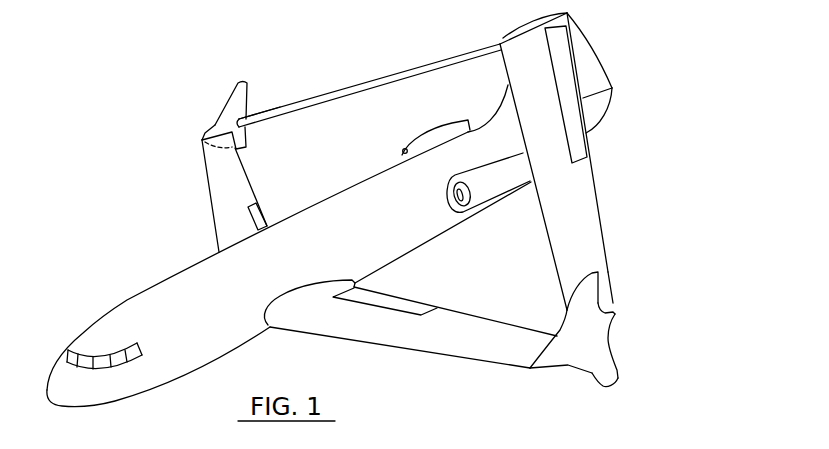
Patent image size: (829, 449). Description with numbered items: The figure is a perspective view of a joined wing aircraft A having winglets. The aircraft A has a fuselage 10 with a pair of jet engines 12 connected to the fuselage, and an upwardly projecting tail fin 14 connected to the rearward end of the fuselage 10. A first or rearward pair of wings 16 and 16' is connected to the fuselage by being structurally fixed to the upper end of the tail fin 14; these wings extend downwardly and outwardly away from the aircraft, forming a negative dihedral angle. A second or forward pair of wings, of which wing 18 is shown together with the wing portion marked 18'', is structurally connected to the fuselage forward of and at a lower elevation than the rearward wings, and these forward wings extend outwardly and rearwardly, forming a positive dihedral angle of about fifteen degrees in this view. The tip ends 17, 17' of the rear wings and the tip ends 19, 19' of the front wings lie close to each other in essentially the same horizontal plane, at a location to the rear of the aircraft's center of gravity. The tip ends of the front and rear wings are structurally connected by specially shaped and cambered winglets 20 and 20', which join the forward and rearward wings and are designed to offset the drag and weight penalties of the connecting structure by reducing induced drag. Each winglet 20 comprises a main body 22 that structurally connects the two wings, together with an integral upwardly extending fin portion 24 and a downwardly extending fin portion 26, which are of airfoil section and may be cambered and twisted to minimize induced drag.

The fuselage 10 is at (108, 297).
The jet engines 12 is at (498, 188).
The tail fin 14 is at (583, 62).
The rearward wing 16 is at (580, 161).
The rearward wing 16' is at (370, 67).
The tip end of rear wing 17 is at (637, 293).
The tip end of rear wing 17' is at (271, 88).
The forward wing 18 is at (410, 286).
The rear body 18'' is at (249, 196).
The tip end of front wing 19 is at (549, 363).
The tip end of front wing 19' is at (189, 126).
The winglet 20 is at (618, 341).
The winglet 20' is at (224, 95).
The main body 22 is at (615, 322).
The upwardly extending fin portion 24 is at (588, 292).
The downwardly extending fin portion 26 is at (598, 370).
The joined wing aircraft A is at (199, 147).